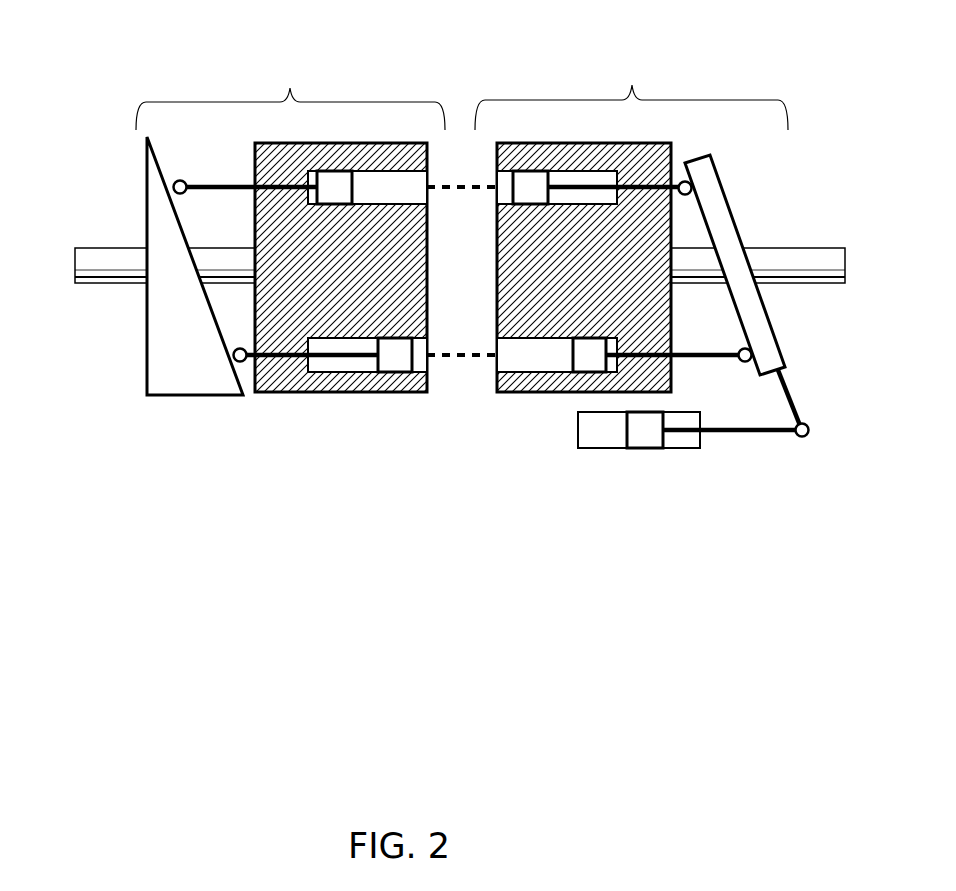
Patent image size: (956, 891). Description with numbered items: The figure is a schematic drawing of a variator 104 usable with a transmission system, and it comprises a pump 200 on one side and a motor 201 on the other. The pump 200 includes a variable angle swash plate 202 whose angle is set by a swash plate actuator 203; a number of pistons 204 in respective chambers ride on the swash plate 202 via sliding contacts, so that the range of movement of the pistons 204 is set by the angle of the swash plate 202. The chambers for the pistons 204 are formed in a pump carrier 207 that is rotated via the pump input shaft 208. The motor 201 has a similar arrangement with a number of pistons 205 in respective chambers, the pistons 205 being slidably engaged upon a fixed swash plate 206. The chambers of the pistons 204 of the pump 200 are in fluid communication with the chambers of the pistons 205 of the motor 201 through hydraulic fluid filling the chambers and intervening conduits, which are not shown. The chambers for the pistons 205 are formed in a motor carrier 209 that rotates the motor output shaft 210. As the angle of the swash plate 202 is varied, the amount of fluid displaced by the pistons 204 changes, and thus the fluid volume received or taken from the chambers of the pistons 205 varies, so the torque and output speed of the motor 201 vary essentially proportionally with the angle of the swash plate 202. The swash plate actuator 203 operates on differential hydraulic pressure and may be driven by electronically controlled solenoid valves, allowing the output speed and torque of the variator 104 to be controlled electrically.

The variator 104 is at (541, 580).
The pump 200 is at (631, 87).
The motor 201 is at (290, 87).
The variable angle swash plate 202 is at (757, 316).
The swash plate actuator 203 is at (653, 455).
The pistons 204 is at (588, 347).
The pistons 205 is at (393, 343).
The fixed swash plate 206 is at (200, 390).
The pump carrier 207 is at (523, 387).
The pump input shaft 208 is at (815, 260).
The motor carrier 209 is at (388, 383).
The motor output shaft 210 is at (89, 258).